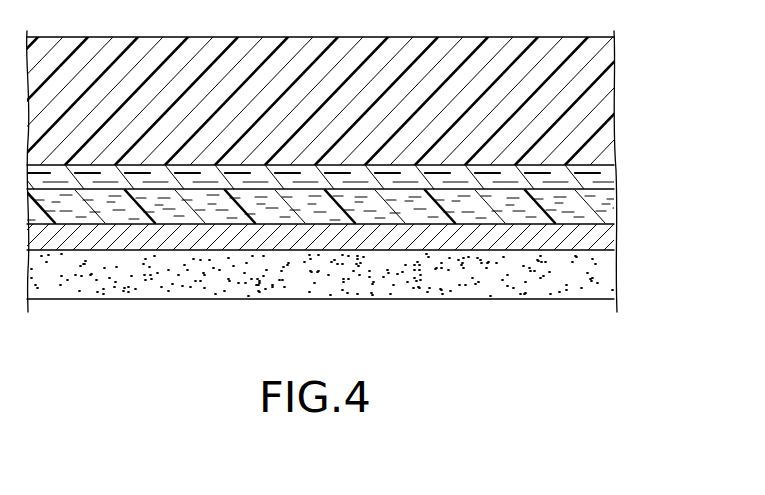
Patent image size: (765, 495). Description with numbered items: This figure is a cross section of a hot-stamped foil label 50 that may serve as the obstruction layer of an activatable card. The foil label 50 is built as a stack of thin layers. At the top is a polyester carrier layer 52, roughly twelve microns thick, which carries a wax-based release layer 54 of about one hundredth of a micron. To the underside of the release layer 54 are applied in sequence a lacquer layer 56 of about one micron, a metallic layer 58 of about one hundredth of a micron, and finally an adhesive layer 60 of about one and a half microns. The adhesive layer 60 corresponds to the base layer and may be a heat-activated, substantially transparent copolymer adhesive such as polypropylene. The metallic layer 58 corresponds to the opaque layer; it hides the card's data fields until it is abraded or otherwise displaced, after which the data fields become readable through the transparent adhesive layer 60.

The foil label 50 is at (148, 322).
The polyester carrier layer 52 is at (613, 122).
The wax-based release layer 54 is at (613, 177).
The lacquer layer 56 is at (615, 205).
The metallic layer 58 is at (616, 237).
The adhesive layer 60 is at (616, 277).